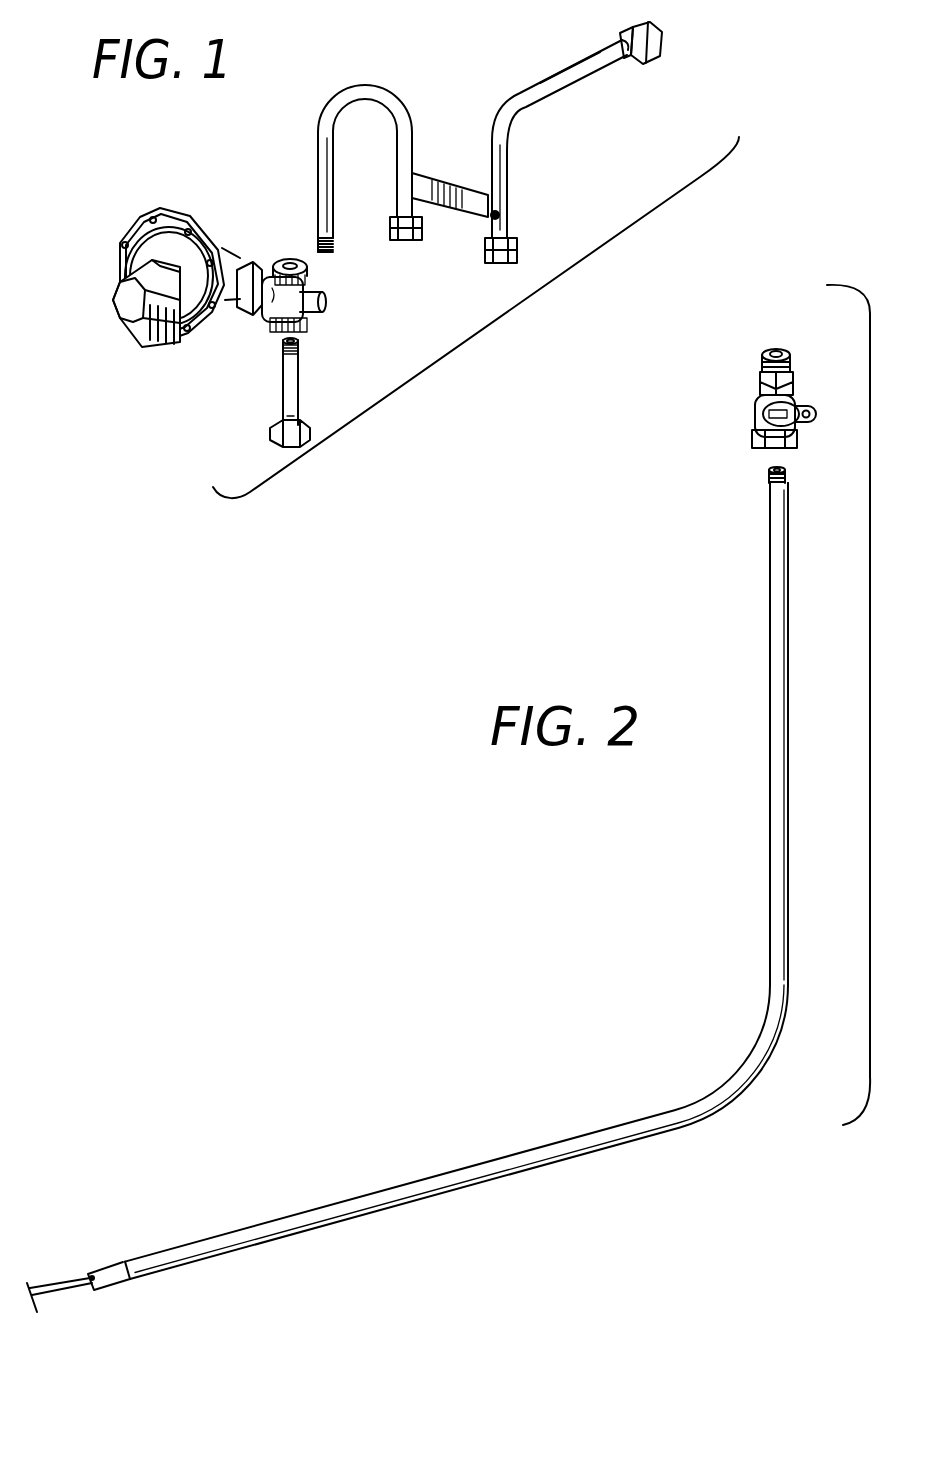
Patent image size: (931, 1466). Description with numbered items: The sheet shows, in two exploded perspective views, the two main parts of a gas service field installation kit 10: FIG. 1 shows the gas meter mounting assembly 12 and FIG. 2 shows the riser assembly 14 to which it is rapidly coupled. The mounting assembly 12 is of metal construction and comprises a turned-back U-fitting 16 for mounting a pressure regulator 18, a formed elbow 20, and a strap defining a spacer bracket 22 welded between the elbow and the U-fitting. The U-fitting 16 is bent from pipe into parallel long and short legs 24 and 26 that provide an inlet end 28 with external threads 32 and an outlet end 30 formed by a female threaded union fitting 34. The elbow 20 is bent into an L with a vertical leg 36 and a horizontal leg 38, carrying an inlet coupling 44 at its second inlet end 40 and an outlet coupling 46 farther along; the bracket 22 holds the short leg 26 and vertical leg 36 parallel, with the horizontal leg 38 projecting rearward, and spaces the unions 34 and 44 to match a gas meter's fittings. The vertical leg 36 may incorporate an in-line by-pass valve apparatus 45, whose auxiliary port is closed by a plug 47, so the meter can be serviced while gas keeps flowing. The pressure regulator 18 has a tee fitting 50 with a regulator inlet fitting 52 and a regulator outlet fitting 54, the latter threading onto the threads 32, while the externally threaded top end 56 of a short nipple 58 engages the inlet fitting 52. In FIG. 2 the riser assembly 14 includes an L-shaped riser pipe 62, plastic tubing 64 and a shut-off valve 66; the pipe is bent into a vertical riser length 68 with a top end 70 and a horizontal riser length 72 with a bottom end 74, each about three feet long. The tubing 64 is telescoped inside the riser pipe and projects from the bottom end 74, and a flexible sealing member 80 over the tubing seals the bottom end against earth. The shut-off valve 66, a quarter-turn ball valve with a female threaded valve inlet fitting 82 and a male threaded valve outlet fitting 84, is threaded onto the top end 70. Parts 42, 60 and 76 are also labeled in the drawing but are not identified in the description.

In FIG. 1, the gas service field installation kit 10 is at (288, 58).
In FIG. 1, the gas meter mounting assembly 12 is at (246, 140).
In FIG. 2, the riser assembly 14 is at (720, 846).
In FIG. 1, the turned back U-fitting 16 is at (358, 78).
In FIG. 1, the pressure regulator 18 is at (135, 216).
In FIG. 1, the elbow 20 is at (527, 90).
In FIG. 1, the spacer bracket 22 is at (446, 177).
In FIG. 1, the long leg 24 is at (318, 185).
In FIG. 1, the short leg 26 is at (398, 174).
In FIG. 1, the inlet end 28 is at (318, 232).
In FIG. 1, the outlet end 30 is at (424, 222).
In FIG. 1, the external threads 32 is at (325, 250).
In FIG. 1, the female threaded union fitting 34 is at (402, 244).
In FIG. 1, the vertical leg 36 is at (508, 205).
In FIG. 1, the horizontal leg 38 is at (573, 84).
In FIG. 1, the second inlet end 40 is at (512, 236).
In FIG. 1, the fitting 42 is at (660, 50).
In FIG. 1, the inlet coupling 44 is at (517, 258).
In FIG. 1, the by-pass valve apparatus 45 is at (490, 219).
In FIG. 1, the outlet coupling 46 is at (624, 28).
In FIG. 1, the plug 47 is at (498, 205).
In FIG. 1, the tee fitting 50 is at (268, 312).
In FIG. 1, the regulator inlet fitting 52 is at (305, 320).
In FIG. 1, the regulator outlet fitting 54 is at (305, 274).
In FIG. 1, the externally threaded top end 56 is at (283, 350).
In FIG. 1, the short nipple 58 is at (300, 364).
In FIG. 1, the nut 60 is at (318, 438).
In FIG. 2, the L-shaped riser pipe 62 is at (757, 1009).
In FIG. 2, the plastic tubing 64 is at (62, 1278).
In FIG. 2, the shut-off valve 66 is at (750, 375).
In FIG. 2, the vertical riser length 68 is at (768, 683).
In FIG. 2, the top end 70 is at (765, 482).
In FIG. 2, the horizontal riser length 72 is at (516, 1174).
In FIG. 2, the bottom end 74 is at (137, 1255).
In FIG. 2, the threaded end 76 is at (788, 474).
In FIG. 2, the flexible sealing member 80 is at (118, 1282).
In FIG. 2, the valve inlet fitting 82 is at (768, 352).
In FIG. 2, the valve outlet fitting 84 is at (752, 442).